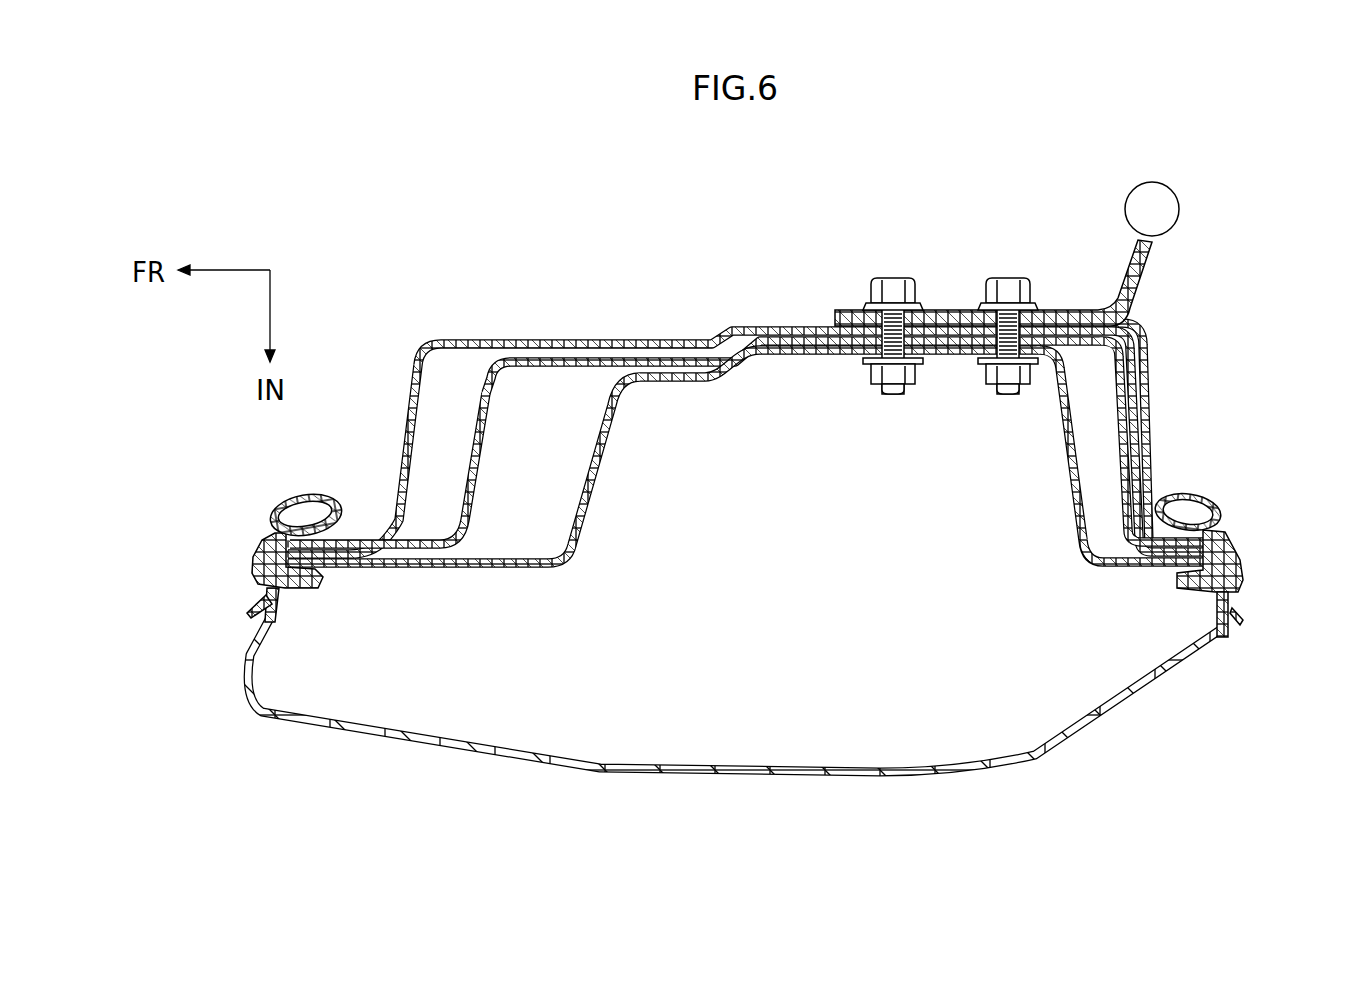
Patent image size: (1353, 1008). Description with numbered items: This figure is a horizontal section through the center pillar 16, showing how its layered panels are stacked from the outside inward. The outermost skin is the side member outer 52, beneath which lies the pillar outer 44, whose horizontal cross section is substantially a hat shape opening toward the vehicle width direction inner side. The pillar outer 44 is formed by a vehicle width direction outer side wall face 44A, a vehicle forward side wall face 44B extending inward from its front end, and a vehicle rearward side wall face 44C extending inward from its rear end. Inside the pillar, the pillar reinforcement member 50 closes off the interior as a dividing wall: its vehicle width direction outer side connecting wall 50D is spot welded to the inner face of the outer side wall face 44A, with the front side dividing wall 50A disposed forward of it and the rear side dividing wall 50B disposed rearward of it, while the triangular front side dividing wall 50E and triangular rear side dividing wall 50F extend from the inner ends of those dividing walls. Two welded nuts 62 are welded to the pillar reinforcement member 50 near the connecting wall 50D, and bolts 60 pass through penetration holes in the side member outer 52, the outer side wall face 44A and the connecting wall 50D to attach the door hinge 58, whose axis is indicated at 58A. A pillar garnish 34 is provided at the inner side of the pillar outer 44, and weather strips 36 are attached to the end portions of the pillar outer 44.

The center pillar 16 is at (1174, 368).
The pillar garnish 34 is at (893, 774).
The weather strip 36 is at (280, 500).
The pillar outer 44 is at (747, 427).
The vehicle width direction outer side wall face 44A is at (578, 368).
The vehicle forward side wall face 44B is at (488, 452).
The vehicle rearward side wall face 44C is at (1078, 537).
The pillar reinforcement member 50 is at (750, 504).
The front side dividing wall 50A is at (605, 468).
The rear side dividing wall 50B is at (1058, 452).
The vehicle width direction outer side connecting wall 50D is at (706, 388).
The triangular front side dividing wall 50E is at (469, 570).
The triangular rear side dividing wall 50F is at (1140, 570).
The side member outer 52 is at (422, 346).
The door hinge 58 is at (1151, 268).
The axis of the door hinge 58A is at (1180, 208).
The bolt 60 is at (893, 277).
The welded nut 62 is at (882, 388).